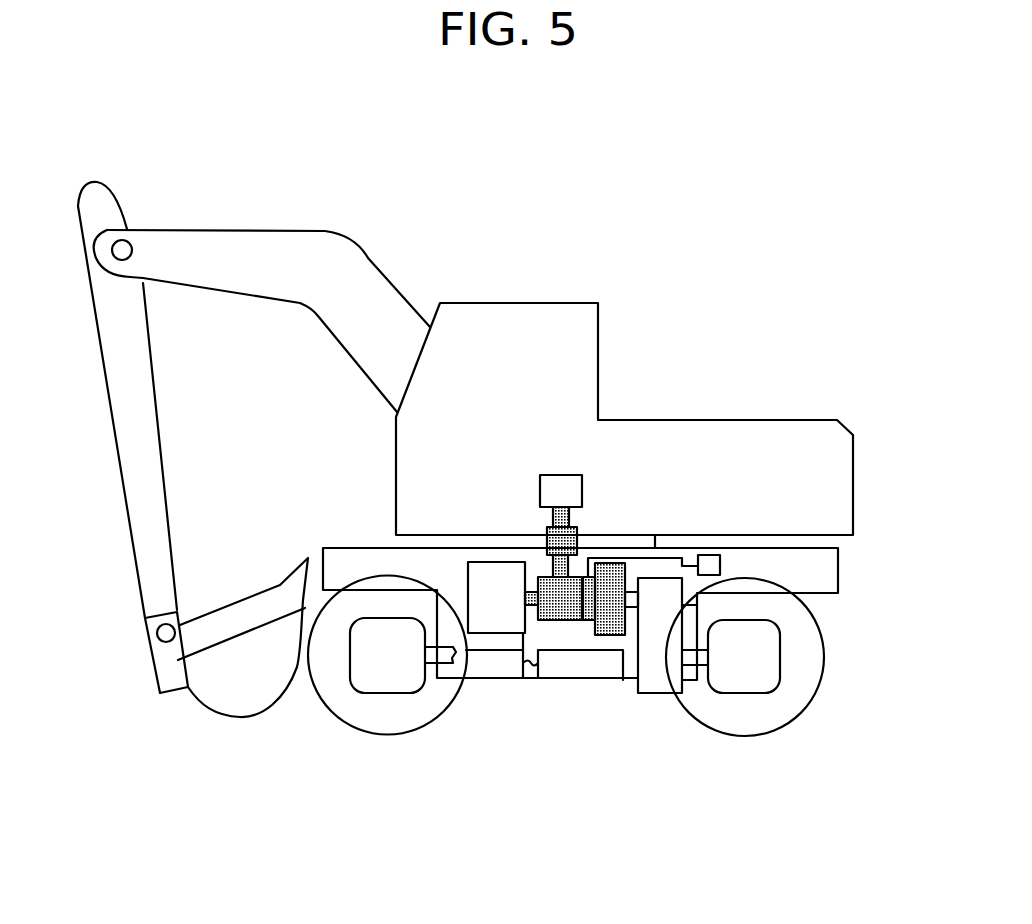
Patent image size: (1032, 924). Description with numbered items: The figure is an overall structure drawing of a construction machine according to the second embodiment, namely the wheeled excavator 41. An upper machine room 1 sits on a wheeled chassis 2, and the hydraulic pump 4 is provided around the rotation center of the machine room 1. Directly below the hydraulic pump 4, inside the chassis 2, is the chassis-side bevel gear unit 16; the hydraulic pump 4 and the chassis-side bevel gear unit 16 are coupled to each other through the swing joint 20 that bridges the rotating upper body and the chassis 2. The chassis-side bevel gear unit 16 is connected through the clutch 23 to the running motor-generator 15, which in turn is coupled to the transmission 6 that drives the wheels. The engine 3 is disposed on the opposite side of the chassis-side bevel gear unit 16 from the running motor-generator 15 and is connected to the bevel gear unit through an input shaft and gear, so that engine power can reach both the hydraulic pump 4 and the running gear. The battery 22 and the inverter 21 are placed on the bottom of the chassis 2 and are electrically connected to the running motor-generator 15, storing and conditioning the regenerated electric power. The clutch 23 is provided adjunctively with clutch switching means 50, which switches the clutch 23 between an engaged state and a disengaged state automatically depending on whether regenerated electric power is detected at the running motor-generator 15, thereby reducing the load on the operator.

The machine room 1 is at (755, 440).
The chassis 2 is at (823, 585).
The engine 3 is at (510, 627).
The hydraulic pump 4 is at (558, 478).
The transmission 6 is at (655, 685).
The running motor-generator 15 is at (607, 567).
The chassis-side bevel gear unit 16 is at (562, 615).
The swing joint 20 is at (552, 543).
The inverter 21 is at (610, 633).
The battery 22 is at (487, 668).
The clutch 23 is at (588, 615).
The wheeled excavator 41 is at (679, 179).
The clutch switching means 50 is at (712, 555).